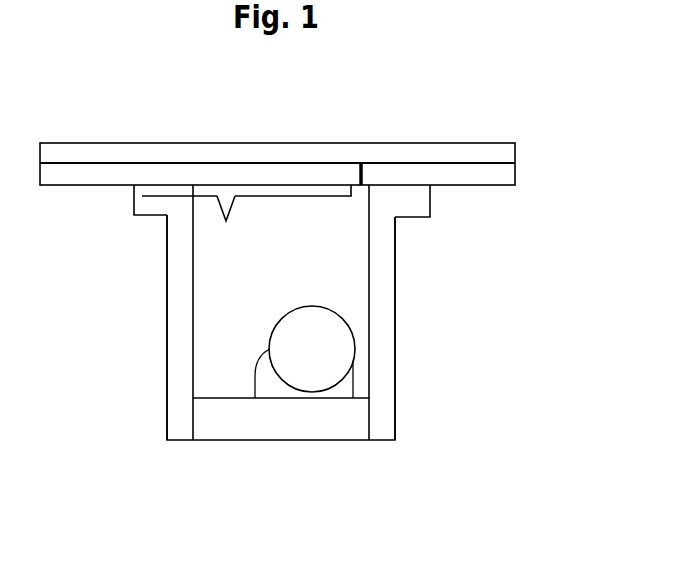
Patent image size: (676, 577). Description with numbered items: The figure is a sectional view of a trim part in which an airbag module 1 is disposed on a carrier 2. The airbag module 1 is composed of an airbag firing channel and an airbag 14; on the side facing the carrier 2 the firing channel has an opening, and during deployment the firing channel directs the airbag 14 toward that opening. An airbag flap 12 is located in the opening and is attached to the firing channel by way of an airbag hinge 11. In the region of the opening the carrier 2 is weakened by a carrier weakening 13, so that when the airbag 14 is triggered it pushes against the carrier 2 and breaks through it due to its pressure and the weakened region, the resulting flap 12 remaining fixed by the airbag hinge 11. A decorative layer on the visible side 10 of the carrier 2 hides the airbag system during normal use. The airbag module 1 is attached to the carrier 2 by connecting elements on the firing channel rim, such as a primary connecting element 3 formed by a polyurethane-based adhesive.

The airbag module 1 is at (421, 387).
The carrier 2 is at (73, 177).
The primary connecting element 3 is at (150, 150).
The visible side 10 is at (235, 122).
The airbag hinge 11 is at (231, 212).
The airbag flap 12 is at (312, 197).
The carrier weakening 13 is at (371, 181).
The airbag 14 is at (303, 356).